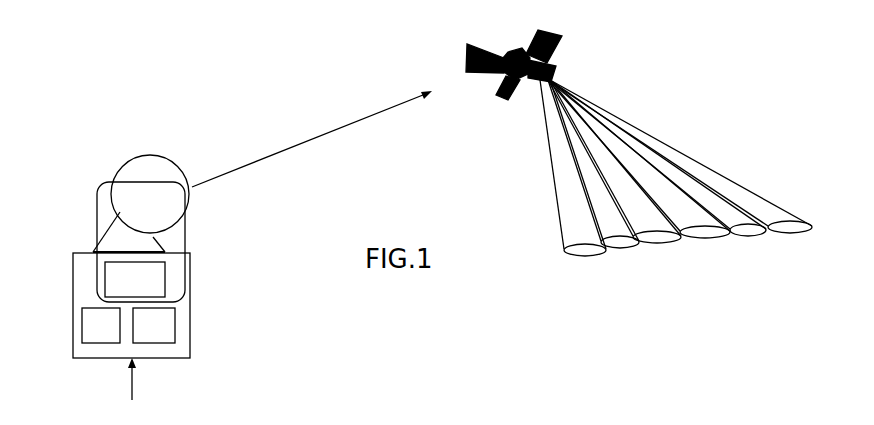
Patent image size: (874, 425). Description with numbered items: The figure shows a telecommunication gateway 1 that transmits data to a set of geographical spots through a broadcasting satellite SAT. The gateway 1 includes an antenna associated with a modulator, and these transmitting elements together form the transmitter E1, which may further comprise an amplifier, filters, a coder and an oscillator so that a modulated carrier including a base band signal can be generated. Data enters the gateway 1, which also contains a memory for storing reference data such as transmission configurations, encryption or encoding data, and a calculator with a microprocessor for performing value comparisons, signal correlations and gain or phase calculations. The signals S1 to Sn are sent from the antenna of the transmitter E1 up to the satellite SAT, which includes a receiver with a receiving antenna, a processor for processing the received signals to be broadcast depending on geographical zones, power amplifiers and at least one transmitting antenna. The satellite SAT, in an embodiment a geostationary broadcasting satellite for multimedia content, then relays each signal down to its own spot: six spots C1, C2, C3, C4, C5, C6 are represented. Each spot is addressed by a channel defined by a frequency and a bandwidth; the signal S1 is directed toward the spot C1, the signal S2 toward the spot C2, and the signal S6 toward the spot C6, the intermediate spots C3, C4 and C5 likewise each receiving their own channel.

The telecommunication gateway 1 is at (233, 273).
The transmitter E1 is at (102, 218).
The signals S1 to Sn is at (323, 133).
The broadcasting satellite SAT is at (565, 42).
The signal S1 is at (568, 220).
The signal S2 is at (577, 152).
The signal S6 is at (707, 163).
The geographical spot C1 is at (583, 257).
The geographical spot C2 is at (628, 249).
The geographical spot C3 is at (673, 243).
The geographical spot C4 is at (708, 238).
The geographical spot C5 is at (752, 236).
The geographical spot C6 is at (793, 233).